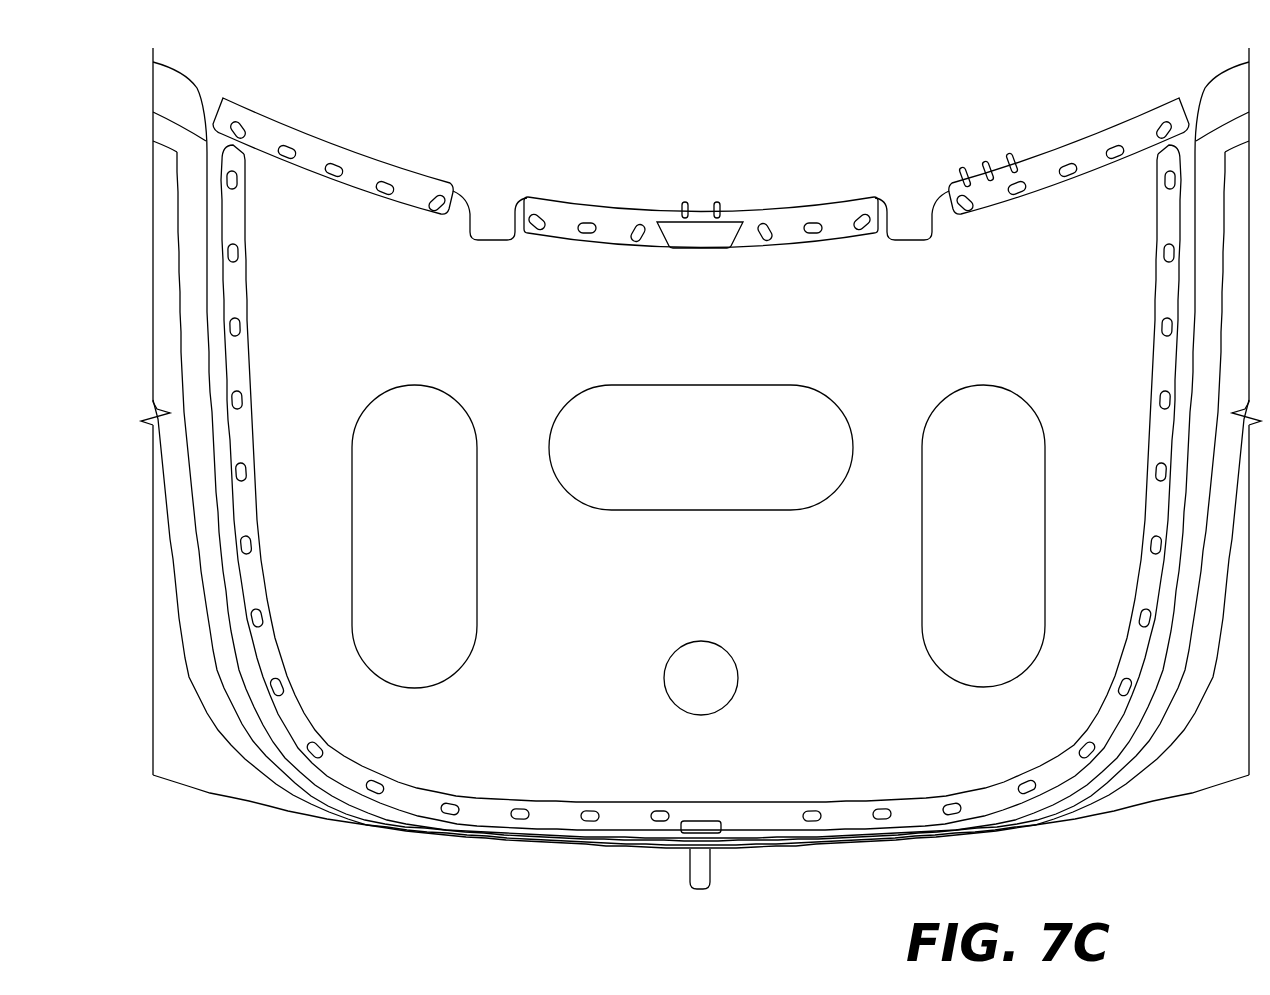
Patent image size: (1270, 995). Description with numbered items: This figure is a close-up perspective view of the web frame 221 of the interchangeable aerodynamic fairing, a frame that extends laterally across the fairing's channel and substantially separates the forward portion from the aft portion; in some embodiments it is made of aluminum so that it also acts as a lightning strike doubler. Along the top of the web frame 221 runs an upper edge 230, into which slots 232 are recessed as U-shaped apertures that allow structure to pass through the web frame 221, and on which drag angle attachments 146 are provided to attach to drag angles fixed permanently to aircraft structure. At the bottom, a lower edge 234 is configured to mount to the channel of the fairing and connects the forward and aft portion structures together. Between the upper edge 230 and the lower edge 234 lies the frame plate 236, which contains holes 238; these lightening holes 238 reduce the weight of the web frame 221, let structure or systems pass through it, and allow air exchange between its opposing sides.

The drag angle attachments 146 is at (717, 199).
The web frame 221 is at (453, 120).
The upper edge 230 is at (793, 207).
The slots 232 is at (490, 183).
The lower edge 234 is at (582, 850).
The frame plate 236 is at (460, 753).
The holes 238 is at (417, 680).